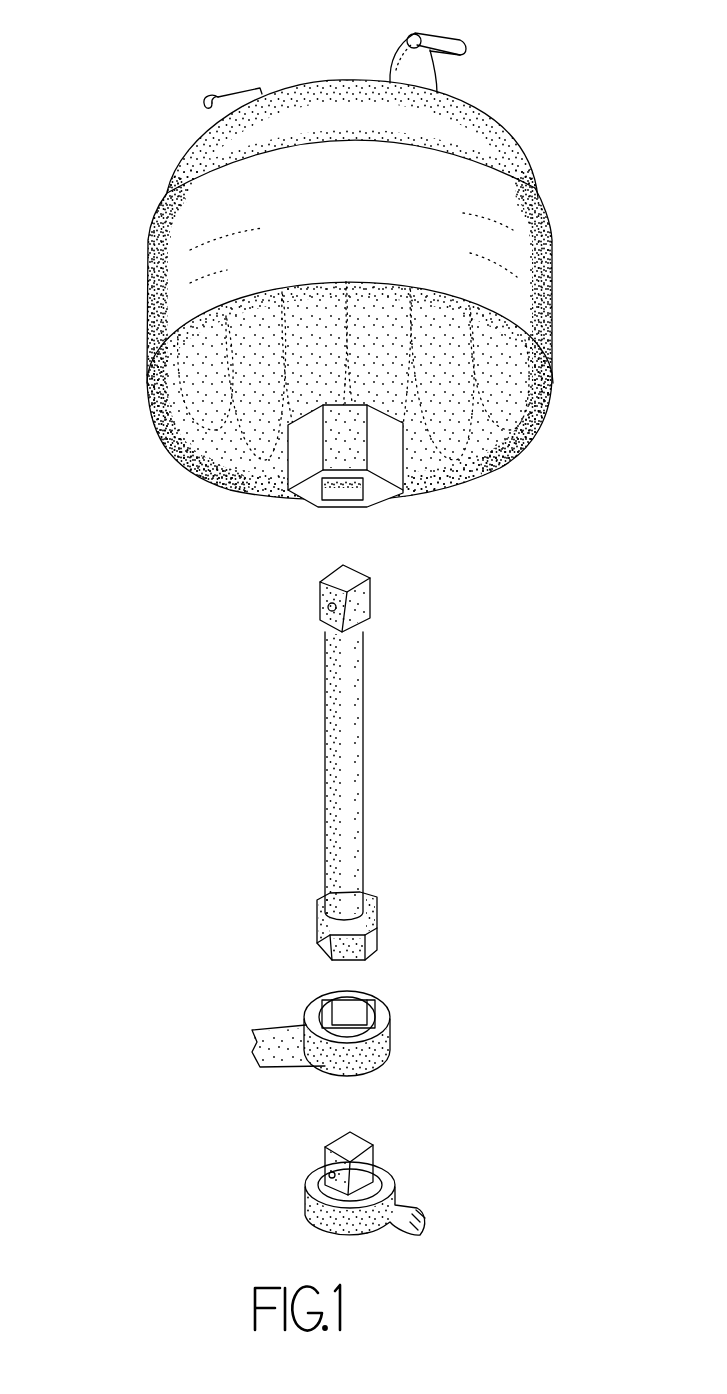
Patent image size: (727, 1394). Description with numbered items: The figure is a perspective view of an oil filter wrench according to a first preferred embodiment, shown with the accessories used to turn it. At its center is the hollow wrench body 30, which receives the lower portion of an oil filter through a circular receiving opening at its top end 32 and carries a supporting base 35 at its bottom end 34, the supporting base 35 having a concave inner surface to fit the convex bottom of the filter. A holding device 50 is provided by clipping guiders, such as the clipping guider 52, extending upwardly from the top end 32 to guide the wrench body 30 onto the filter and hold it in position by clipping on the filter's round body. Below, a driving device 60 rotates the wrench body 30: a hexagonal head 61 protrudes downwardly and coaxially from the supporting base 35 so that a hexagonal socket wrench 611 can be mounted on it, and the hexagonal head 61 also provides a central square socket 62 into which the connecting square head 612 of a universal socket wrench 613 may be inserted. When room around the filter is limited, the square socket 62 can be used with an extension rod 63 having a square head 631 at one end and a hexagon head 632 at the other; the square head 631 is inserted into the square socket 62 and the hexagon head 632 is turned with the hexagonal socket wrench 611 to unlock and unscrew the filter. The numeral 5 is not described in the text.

The holding device 50 is at (557, 90).
The hanging hook 5 is at (430, 80).
The clipping guider 52 is at (218, 96).
The top end 32 is at (500, 152).
The wrench body 30 is at (528, 308).
The bottom end 34 is at (167, 307).
The supporting base 35 is at (502, 432).
The driving device 60 is at (377, 513).
The hexagonal head 61 is at (308, 447).
The square socket 62 is at (336, 500).
The extension rod 63 is at (348, 752).
The square head 631 is at (362, 603).
The hexagon head 632 is at (372, 935).
The hexagonal socket wrench 611 is at (393, 1058).
The connecting square head 612 is at (360, 1140).
The universal socket wrench 613 is at (407, 1208).